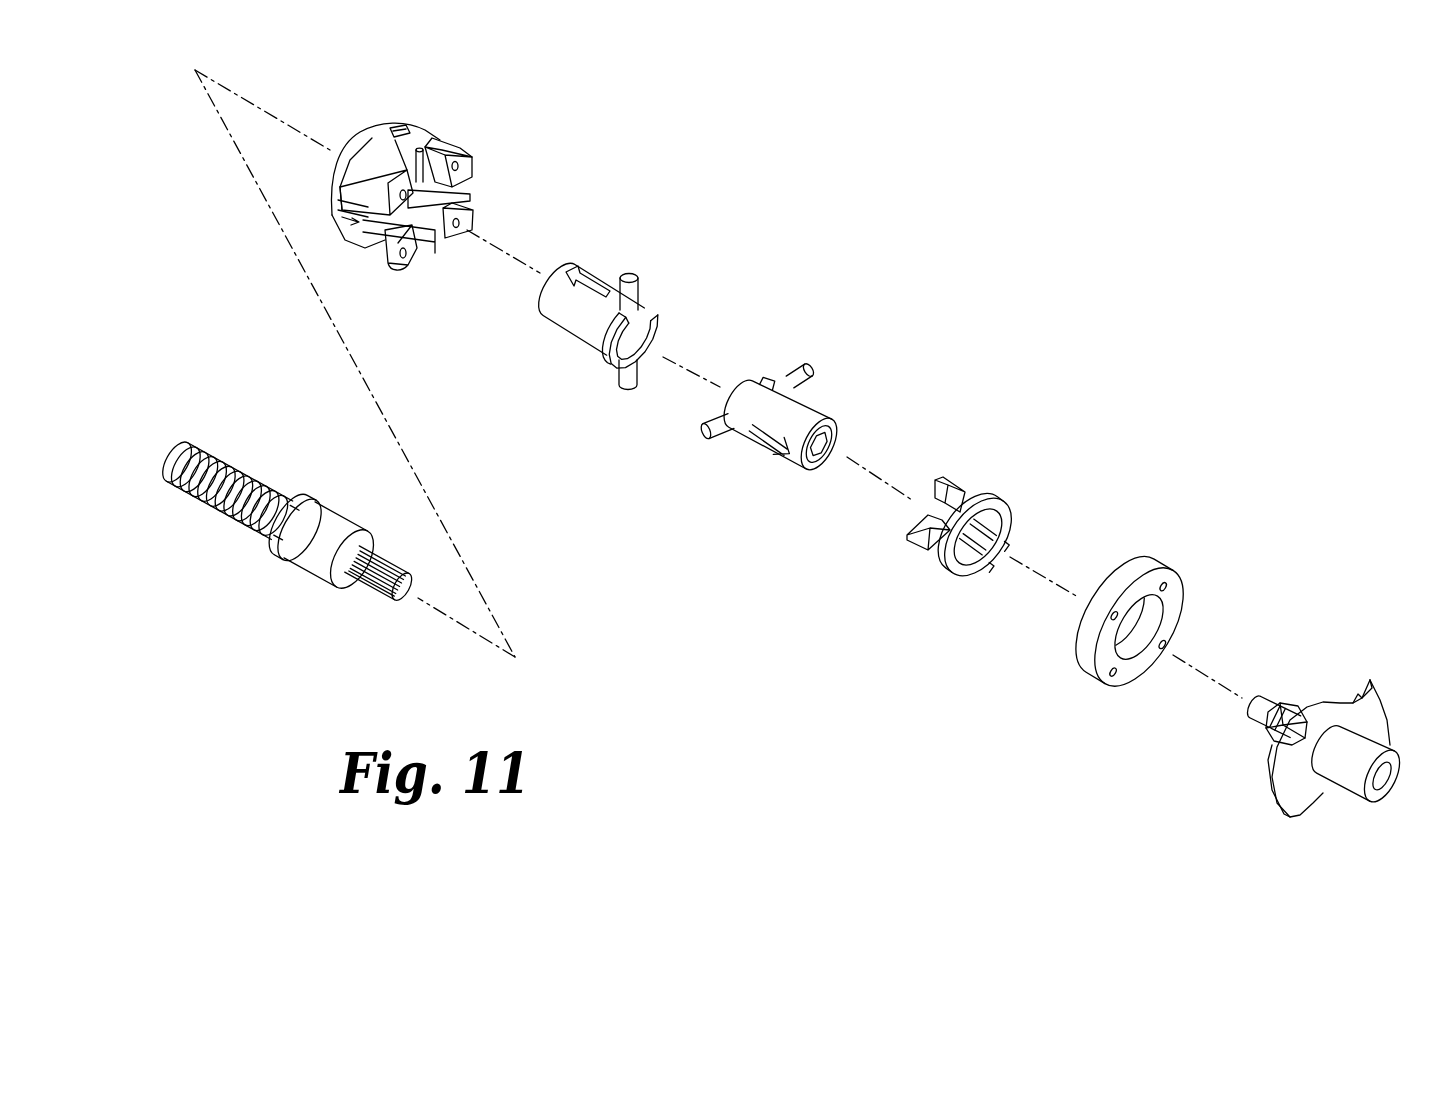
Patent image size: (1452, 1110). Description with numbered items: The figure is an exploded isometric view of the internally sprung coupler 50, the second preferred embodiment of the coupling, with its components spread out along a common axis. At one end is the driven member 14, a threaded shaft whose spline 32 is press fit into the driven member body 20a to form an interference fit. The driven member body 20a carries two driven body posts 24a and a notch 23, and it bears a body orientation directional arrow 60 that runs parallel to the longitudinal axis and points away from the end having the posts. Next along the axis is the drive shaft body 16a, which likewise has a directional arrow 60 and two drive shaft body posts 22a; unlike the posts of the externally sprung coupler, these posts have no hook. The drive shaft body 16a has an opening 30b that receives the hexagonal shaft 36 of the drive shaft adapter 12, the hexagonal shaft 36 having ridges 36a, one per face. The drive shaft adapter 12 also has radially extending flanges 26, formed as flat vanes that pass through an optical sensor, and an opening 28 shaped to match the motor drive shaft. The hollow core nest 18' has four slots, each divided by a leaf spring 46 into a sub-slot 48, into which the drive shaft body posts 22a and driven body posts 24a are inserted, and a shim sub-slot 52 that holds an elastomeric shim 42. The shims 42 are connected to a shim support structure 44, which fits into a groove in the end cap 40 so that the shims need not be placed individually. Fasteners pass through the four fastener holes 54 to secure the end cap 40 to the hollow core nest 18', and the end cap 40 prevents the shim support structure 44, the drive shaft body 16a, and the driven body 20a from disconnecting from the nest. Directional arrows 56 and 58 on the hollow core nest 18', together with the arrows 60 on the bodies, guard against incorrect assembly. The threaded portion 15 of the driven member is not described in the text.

The drive shaft adapter 12 is at (1383, 753).
The driven member 14 is at (326, 510).
The threaded portion 15 is at (210, 503).
The drive shaft body 16a is at (806, 410).
The hollow core nest 18' is at (420, 199).
The driven member body 20a is at (568, 318).
The drive shaft body post 22a is at (803, 372).
The notch 23 is at (647, 336).
The driven body post 24a is at (639, 280).
The radially extending flange 26 is at (1377, 692).
The opening 28 is at (1381, 780).
The opening 30b is at (830, 438).
The spline 32 is at (374, 590).
The hexagonal shaft 36 is at (1295, 702).
The ridges 36a is at (1270, 727).
The end cap 40 is at (1088, 673).
The elastomeric shim 42 is at (955, 483).
The shim support structure 44 is at (950, 578).
The leaf spring 46 is at (422, 160).
The sub-slot 48 is at (420, 152).
The internally sprung coupler 50 is at (640, 745).
The shim sub-slot 52 is at (337, 190).
The fastener holes 54 is at (462, 164).
The directional arrow 56 is at (406, 127).
The directional arrow 58 is at (350, 230).
The body orientation directional arrow 60 is at (602, 284).